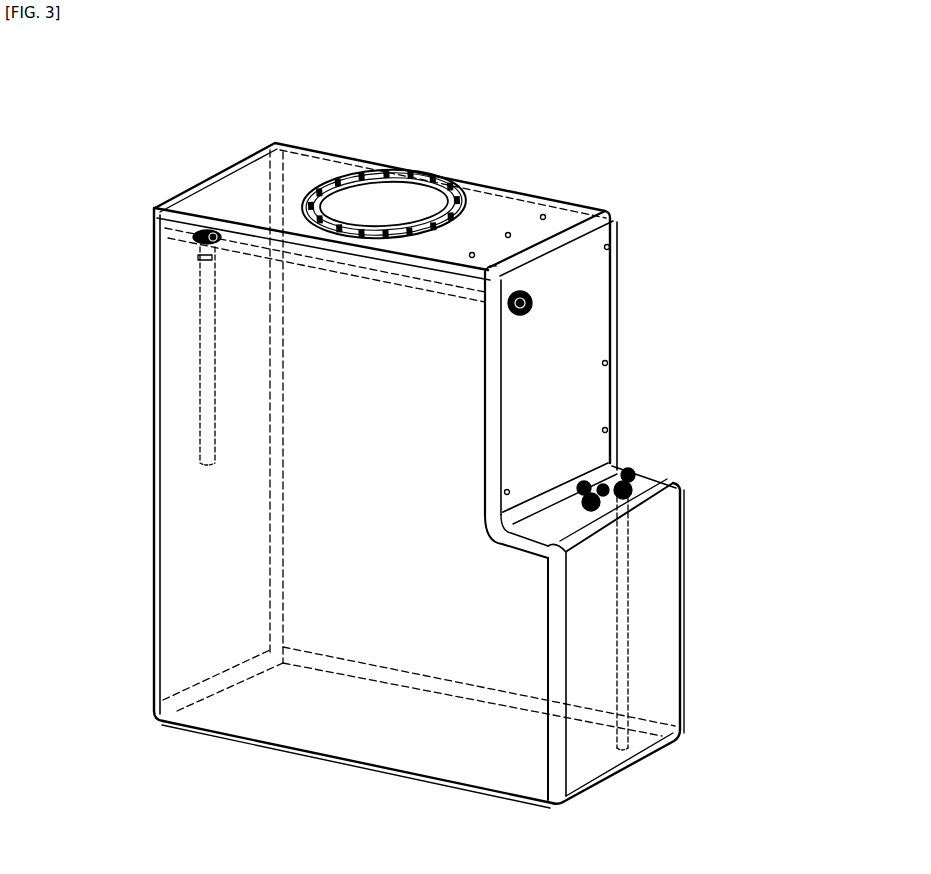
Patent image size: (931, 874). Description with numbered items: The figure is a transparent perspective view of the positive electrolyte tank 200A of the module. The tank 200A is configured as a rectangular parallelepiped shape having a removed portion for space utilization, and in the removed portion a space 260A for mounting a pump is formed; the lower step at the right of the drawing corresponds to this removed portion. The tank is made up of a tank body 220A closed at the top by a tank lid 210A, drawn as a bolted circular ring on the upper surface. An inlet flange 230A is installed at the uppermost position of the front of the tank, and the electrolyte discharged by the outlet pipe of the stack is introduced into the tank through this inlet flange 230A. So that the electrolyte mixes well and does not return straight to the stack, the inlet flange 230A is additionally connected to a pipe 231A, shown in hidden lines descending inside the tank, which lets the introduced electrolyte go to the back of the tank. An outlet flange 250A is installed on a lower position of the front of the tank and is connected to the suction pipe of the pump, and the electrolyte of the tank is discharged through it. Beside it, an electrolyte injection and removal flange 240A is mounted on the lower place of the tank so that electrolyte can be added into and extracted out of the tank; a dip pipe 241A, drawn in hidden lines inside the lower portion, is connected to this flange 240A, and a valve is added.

The tank 200A is at (310, 147).
The tank lid 210A is at (388, 203).
The tank body 220A is at (493, 217).
The inlet flange 230A is at (537, 297).
The pipe 231A is at (200, 347).
The electrolyte injection/removal flange 240A is at (640, 482).
The dip pipe 241A is at (623, 640).
The outlet flange 250A is at (605, 478).
The space for mounting a pump 260A is at (652, 360).